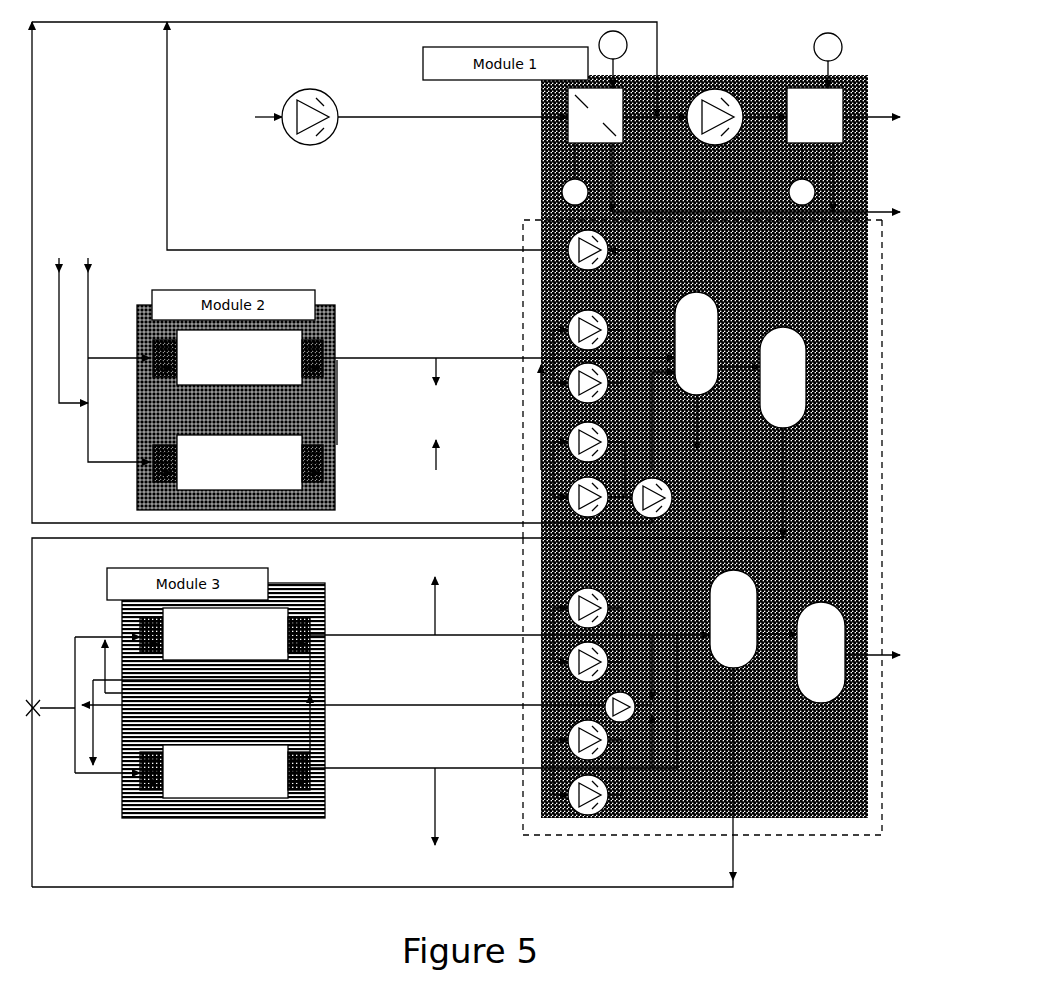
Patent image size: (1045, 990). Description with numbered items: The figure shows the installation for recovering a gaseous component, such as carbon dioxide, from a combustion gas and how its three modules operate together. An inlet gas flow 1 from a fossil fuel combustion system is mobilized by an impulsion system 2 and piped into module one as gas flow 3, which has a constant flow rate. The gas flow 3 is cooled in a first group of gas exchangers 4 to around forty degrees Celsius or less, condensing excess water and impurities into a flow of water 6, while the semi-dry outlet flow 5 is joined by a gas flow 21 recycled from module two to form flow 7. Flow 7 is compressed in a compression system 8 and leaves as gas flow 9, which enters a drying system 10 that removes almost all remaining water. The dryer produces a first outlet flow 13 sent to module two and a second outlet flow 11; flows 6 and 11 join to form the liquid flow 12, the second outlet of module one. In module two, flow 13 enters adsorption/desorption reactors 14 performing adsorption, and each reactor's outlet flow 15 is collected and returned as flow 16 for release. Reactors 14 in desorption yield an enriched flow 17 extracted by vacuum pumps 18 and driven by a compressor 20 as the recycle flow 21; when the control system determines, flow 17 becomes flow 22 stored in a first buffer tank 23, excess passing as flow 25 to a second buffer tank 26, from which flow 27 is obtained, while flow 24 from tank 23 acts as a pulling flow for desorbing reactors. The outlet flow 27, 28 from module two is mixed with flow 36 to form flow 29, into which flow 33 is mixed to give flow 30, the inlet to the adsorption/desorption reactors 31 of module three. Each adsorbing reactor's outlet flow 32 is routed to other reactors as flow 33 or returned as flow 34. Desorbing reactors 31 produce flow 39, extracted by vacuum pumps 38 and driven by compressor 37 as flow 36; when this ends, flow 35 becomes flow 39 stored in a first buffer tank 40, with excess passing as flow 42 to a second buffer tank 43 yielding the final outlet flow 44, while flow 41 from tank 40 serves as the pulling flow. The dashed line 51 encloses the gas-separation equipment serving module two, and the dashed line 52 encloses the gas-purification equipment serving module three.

The inlet gas flow 1 is at (257, 117).
The impulsion system 2 is at (310, 117).
The gas flow 3 is at (453, 128).
The first group of gas exchangers 4 is at (594, 118).
The outlet flow from the group of exchangers 5 is at (640, 129).
The flow of water 6 is at (715, 117).
The flow 7 is at (672, 129).
The compression system 8 is at (627, 177).
The gas flow 9 is at (765, 129).
The drying system 10 is at (815, 119).
The second outlet flow 11 is at (833, 177).
The liquid flow 12 is at (773, 212).
The first outlet flow from module 1 13 is at (507, 300).
The adsorption/desorption reactors 14 is at (239, 410).
The outlet flow of each reactor 15 is at (316, 411).
The flow 16 is at (436, 414).
The flow 17 is at (499, 357).
The vacuum pumps 18 is at (589, 413).
The compressor 20 is at (588, 250).
The gas flow 21 is at (346, 275).
The flow 22 is at (608, 400).
The first buffer tank 23 is at (696, 343).
The flow 24 is at (378, 354).
The flow 25 is at (739, 356).
The second buffer tank 26 is at (783, 377).
The flow 27 is at (407, 657).
The outlet flow from module 2 28 is at (50, 708).
The flow 29 is at (95, 705).
The flow 30 is at (402, 634).
The adsorption/desorption reactors 31 is at (225, 703).
The outlet flow from each adsorption/desorption reactor 32 is at (305, 702).
The flow 33 is at (201, 702).
The flow 34 is at (435, 711).
The flow 35 is at (435, 701).
The flow 36 is at (367, 704).
The compressor 37 is at (588, 592).
The vacuum pumps 38 is at (608, 701).
The flow 39 is at (631, 696).
The first buffer tank 40 is at (733, 619).
The flow 41 is at (383, 777).
The flow 42 is at (777, 620).
The second buffer tank 43 is at (821, 652).
The flow 44 is at (890, 655).
The dashed line 51 is at (523, 273).
The dashed line 52 is at (523, 662).